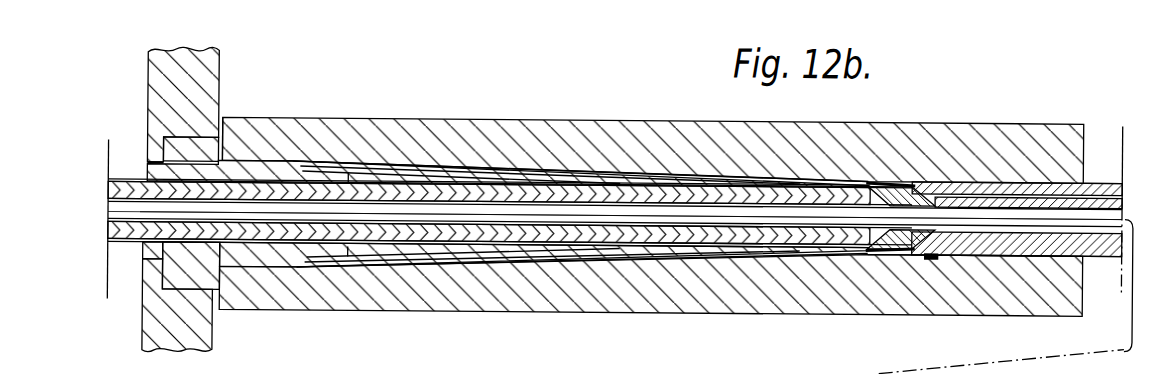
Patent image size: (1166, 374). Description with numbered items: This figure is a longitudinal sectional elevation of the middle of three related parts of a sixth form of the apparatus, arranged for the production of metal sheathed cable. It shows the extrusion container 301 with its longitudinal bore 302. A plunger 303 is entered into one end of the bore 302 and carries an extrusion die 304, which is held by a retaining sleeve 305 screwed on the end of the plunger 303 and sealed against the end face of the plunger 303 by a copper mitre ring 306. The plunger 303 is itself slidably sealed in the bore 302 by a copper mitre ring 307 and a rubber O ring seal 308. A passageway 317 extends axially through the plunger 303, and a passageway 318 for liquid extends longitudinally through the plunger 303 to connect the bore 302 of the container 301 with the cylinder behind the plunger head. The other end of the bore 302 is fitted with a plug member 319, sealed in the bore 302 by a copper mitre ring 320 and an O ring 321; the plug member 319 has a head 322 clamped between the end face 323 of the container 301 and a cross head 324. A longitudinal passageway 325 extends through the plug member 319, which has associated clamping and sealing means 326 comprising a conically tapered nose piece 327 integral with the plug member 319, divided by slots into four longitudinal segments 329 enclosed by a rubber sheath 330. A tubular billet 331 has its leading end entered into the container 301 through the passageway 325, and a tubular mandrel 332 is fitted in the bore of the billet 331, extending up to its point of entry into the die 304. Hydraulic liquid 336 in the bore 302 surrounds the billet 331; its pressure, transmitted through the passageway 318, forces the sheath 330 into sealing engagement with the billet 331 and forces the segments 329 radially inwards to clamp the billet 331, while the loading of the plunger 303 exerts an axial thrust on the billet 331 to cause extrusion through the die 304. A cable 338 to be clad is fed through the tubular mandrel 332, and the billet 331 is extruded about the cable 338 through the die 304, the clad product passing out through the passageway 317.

The extrusion container 301 is at (513, 132).
The longitudinal bore 302 is at (613, 168).
The plunger 303 is at (1107, 250).
The extrusion die 304 is at (895, 236).
The retaining sleeve 305 is at (898, 178).
The copper mitre ring 306 is at (913, 178).
The copper mitre ring 307 is at (937, 252).
The rubber O ring seal 308 is at (920, 256).
The passageway 317 is at (1117, 198).
The passageway for liquid 318 is at (1097, 186).
The plug member 319 is at (318, 120).
The copper mitre ring 320 is at (294, 265).
The O ring 321 is at (300, 269).
The head 322 is at (200, 144).
The end face 323 is at (280, 160).
The cross head 324 is at (203, 81).
The longitudinal passageway 325 is at (341, 165).
The clamping and sealing means 326 is at (387, 167).
The conically tapered nose piece 327 is at (423, 169).
The longitudinal segments 329 is at (425, 261).
The rubber sheath 330 is at (480, 260).
The tubular billet 331 is at (137, 223).
The tubular mandrel 332 is at (130, 181).
The hydraulic liquid 336 is at (750, 252).
The cable 338 is at (652, 210).